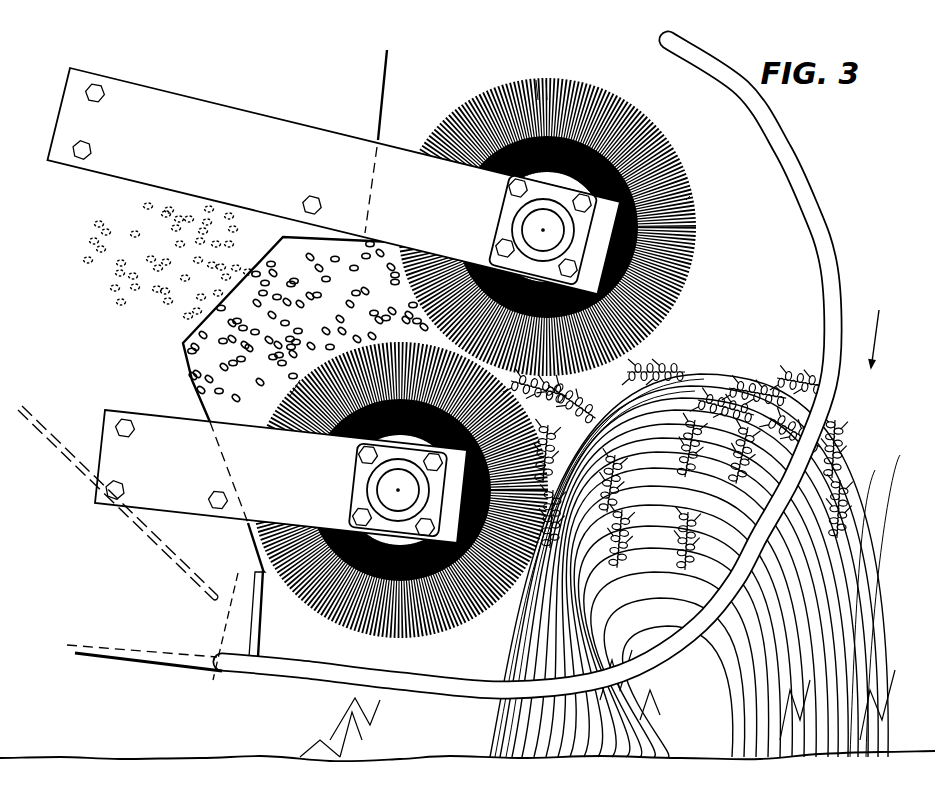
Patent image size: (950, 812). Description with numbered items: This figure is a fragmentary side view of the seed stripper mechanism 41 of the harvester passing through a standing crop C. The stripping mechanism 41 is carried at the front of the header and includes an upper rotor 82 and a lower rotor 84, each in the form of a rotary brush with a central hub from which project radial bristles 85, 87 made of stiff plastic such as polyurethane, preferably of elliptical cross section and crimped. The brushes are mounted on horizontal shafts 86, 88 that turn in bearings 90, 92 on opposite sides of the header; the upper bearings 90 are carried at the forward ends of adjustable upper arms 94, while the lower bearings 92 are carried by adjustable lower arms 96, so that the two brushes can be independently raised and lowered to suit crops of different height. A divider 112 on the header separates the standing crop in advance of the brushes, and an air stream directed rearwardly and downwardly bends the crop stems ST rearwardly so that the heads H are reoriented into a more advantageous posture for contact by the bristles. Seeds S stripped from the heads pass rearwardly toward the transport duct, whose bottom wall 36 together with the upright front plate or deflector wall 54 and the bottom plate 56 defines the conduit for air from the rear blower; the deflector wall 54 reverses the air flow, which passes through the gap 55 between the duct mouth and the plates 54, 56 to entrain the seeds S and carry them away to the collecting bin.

The bottom wall 36 is at (153, 543).
The crop stripping mechanism 41 is at (692, 192).
The upright front plate 54 is at (259, 672).
The gap 55 is at (213, 677).
The bottom plate 56 is at (165, 660).
The upper rotor 82 is at (528, 77).
The lower rotor 84 is at (347, 632).
The radial bristles 85 is at (549, 78).
The horizontal shaft 86 is at (543, 228).
The radial bristles 87 is at (290, 396).
The horizontal shaft 88 is at (397, 490).
The upper bearings 90 is at (507, 190).
The lower bearings 92 is at (355, 452).
The adjustable upper arms 94 is at (267, 113).
The adjustable lower arms 96 is at (173, 413).
The divider 112 is at (793, 157).
The seeds S is at (110, 280).
The heads H is at (687, 367).
The crop stems ST is at (845, 585).
The crop C is at (875, 326).